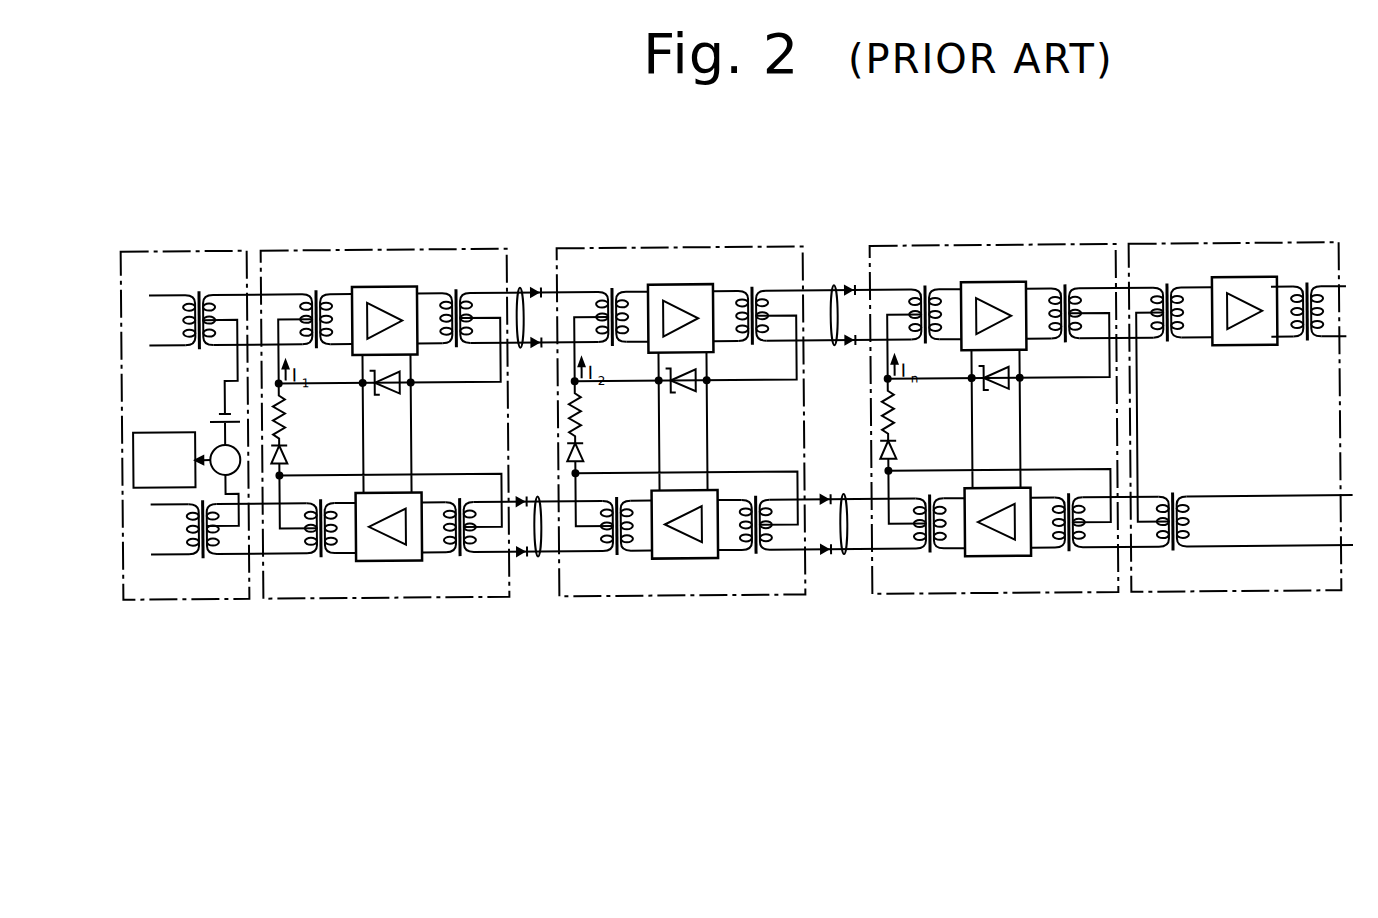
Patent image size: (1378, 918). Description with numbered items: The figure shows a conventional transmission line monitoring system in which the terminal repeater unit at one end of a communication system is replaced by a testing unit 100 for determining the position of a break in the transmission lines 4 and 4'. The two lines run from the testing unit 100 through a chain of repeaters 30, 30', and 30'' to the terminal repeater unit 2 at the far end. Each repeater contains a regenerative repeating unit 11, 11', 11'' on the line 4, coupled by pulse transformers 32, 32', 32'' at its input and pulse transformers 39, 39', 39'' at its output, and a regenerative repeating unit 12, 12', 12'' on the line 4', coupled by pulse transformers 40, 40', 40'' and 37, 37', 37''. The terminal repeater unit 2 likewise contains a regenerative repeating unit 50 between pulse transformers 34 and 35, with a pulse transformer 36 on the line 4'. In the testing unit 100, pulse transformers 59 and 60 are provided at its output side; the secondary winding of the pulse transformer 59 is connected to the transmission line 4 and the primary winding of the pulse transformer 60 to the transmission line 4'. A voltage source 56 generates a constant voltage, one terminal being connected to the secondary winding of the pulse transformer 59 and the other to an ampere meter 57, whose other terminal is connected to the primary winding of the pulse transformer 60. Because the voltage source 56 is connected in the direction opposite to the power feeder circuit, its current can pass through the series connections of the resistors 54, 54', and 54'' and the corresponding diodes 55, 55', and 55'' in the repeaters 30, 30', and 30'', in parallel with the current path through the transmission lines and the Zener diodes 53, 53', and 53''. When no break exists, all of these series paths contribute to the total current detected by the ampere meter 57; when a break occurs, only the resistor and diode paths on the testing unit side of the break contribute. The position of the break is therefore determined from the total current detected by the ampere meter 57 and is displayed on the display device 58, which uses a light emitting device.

The testing unit 100 is at (102, 247).
The terminal repeater unit 2 is at (1234, 383).
The transmission line 4 is at (683, 283).
The transmission line 4' is at (686, 558).
The regenerative repeating unit 11 is at (384, 286).
The regenerative repeating unit 11' is at (680, 284).
The regenerative repeating unit 11'' is at (993, 282).
The regenerative repeating unit 12 is at (389, 567).
The regenerative repeating unit 12' is at (685, 565).
The regenerative repeating unit 12'' is at (998, 563).
The repeater 30 is at (388, 395).
The repeater 30' is at (687, 389).
The repeater 30'' is at (1000, 386).
The pulse transformer 32 is at (310, 283).
The pulse transformer 32' is at (605, 281).
The pulse transformer 32'' is at (917, 278).
The pulse transformer 34 is at (1171, 338).
The pulse transformer 35 is at (1303, 268).
The pulse transformer 36 is at (1176, 491).
The pulse transformer 37 is at (462, 570).
The pulse transformer 37' is at (760, 568).
The pulse transformer 37'' is at (1074, 565).
The pulse transformer 39 is at (451, 282).
The pulse transformer 39' is at (746, 280).
The pulse transformer 39'' is at (1058, 277).
The power feeder circuit 40 is at (318, 571).
The transformer 40' is at (613, 569).
The transformer 40'' is at (927, 566).
The regenerative repeating unit 50 is at (1245, 336).
The Zener diode 53 is at (387, 414).
The Zener diode 53' is at (686, 411).
The Zener diode 53'' is at (1001, 409).
The resistor 54 is at (307, 414).
The resistor 54' is at (606, 412).
The resistor 54'' is at (921, 409).
The diode 55 is at (306, 456).
The diode 55' is at (605, 454).
The diode 55'' is at (919, 451).
The voltage source 56 is at (209, 406).
The ampere meter 57 is at (199, 436).
The display device 58 is at (133, 445).
The pulse transformer 59 is at (197, 305).
The pulse transformer 60 is at (193, 551).